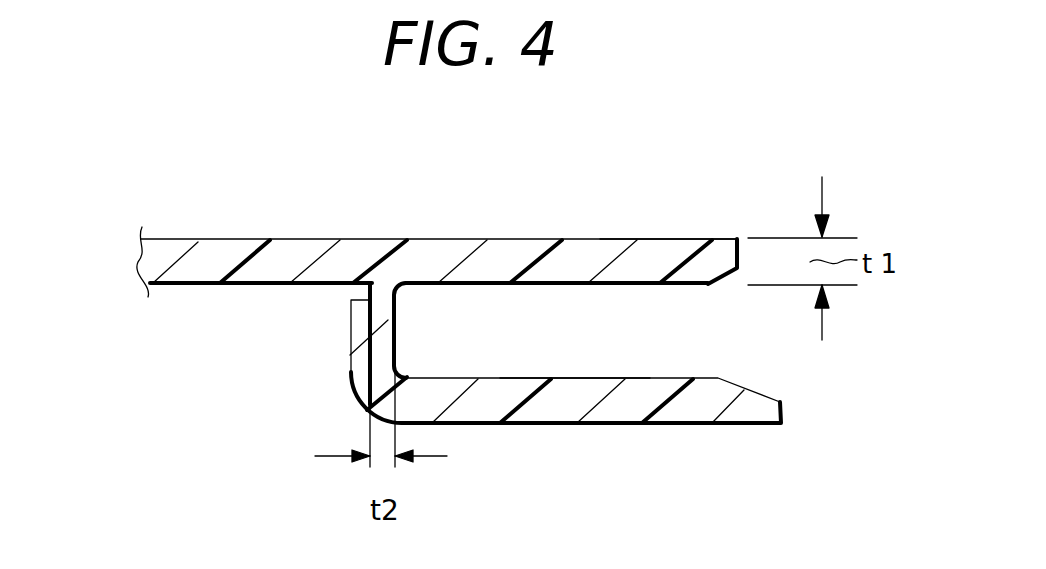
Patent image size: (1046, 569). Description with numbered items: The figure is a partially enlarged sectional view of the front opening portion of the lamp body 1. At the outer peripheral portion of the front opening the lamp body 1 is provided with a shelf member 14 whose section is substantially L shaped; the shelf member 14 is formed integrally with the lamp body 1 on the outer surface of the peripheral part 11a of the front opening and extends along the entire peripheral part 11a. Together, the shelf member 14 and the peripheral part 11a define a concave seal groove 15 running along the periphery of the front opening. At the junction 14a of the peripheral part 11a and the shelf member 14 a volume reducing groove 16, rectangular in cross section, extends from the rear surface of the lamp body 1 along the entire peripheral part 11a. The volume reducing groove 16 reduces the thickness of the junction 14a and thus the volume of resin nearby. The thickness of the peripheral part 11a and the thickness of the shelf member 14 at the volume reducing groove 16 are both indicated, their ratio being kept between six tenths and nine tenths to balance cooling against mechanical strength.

The lamp body 1 is at (198, 267).
The peripheral part 11a is at (655, 260).
The shelf member 14 is at (702, 403).
The junction 14a is at (389, 325).
The seal groove 15 is at (567, 350).
The volume reducing groove 16 is at (357, 293).